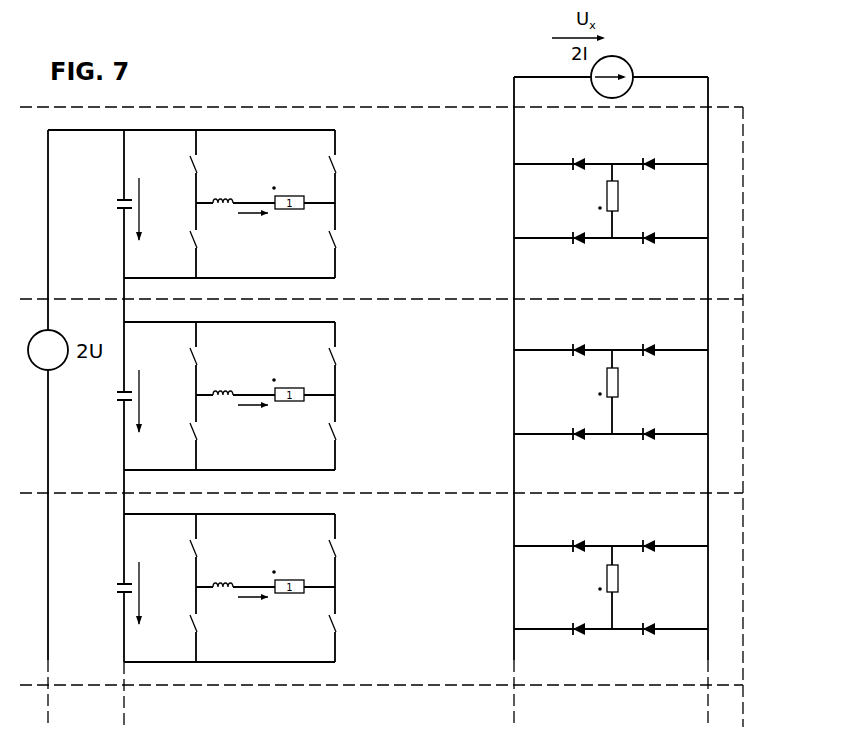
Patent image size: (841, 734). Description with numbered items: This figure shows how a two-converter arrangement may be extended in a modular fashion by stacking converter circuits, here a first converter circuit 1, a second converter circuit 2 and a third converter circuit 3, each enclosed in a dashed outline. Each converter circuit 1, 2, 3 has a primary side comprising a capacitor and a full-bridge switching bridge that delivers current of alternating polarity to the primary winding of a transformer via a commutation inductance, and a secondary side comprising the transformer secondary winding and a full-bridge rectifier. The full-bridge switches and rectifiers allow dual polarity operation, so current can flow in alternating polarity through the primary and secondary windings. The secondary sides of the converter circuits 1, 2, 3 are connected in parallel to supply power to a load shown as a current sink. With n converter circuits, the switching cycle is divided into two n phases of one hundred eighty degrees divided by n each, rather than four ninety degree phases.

The first converter circuit 1 is at (744, 146).
The second converter circuit 2 is at (742, 387).
The third converter circuit 3 is at (743, 563).